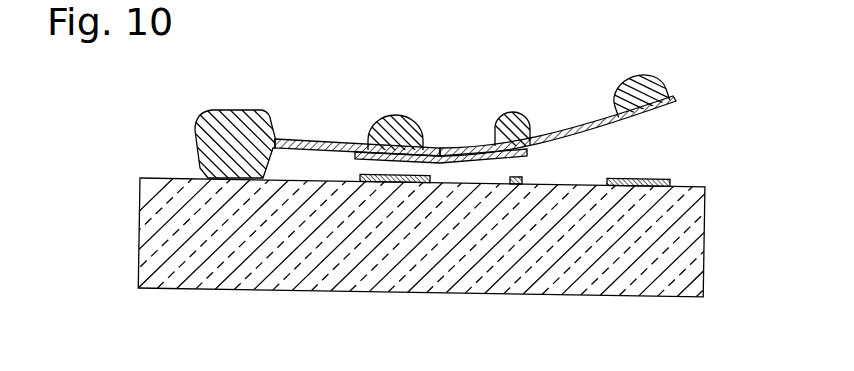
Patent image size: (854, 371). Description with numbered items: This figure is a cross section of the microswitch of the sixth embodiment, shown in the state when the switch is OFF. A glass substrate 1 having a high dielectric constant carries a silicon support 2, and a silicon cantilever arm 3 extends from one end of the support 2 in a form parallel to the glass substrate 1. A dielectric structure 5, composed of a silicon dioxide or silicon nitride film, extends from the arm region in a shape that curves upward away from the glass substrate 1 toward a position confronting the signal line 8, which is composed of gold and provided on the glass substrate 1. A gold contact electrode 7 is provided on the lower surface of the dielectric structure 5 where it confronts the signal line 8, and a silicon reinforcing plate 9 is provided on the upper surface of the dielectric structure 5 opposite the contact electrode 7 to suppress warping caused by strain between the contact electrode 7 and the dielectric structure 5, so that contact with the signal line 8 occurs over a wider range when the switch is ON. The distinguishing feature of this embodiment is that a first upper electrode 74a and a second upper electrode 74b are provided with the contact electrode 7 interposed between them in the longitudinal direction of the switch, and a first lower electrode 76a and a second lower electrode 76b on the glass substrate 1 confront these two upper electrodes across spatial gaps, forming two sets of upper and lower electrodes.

The glass substrate 1 is at (706, 244).
The support 2 is at (233, 111).
The cantilever arm 3 is at (314, 139).
The dielectric structure 5 is at (575, 129).
The contact electrode 7 is at (523, 153).
The signal line 8 is at (515, 186).
The reinforcing plate 9 is at (509, 112).
The first upper electrode 74a is at (392, 114).
The second upper electrode 74b is at (637, 80).
The first lower electrode 76a is at (388, 184).
The second lower electrode 76b is at (632, 188).